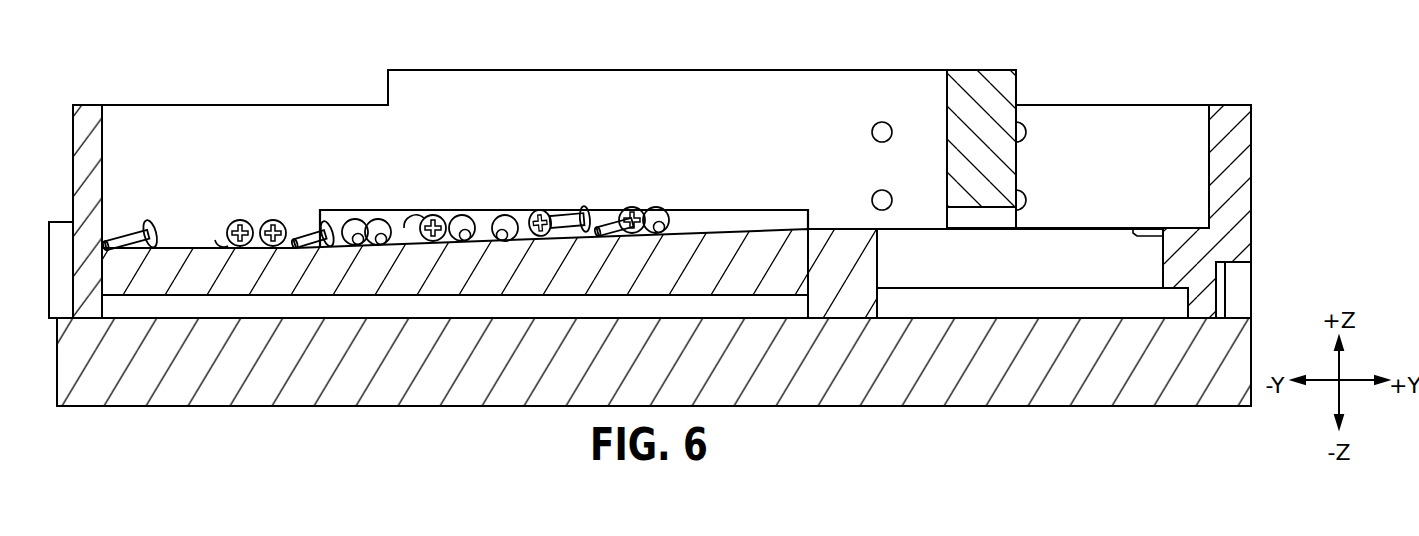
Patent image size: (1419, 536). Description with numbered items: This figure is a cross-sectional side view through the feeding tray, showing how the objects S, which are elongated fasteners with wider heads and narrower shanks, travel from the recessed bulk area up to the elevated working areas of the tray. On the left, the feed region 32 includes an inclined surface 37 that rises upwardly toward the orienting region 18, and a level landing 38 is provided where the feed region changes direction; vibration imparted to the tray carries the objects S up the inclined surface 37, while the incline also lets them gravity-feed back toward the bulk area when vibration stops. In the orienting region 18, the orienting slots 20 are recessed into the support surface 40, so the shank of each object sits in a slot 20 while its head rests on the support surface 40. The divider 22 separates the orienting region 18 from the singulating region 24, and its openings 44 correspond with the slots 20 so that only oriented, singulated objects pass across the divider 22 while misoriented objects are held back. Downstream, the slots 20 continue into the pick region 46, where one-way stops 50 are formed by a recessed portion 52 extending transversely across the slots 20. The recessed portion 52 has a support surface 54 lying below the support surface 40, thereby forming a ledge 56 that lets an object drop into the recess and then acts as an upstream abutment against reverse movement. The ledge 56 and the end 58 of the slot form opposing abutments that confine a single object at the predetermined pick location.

The orienting region 18 is at (860, 217).
The orienting slots 20 is at (980, 253).
The divider 22 is at (984, 80).
The singulating region 24 is at (1060, 160).
The feed region 32 is at (384, 143).
The objects S is at (563, 210).
The inclined surface 37 is at (715, 229).
The level landing 38 is at (197, 248).
The support surface 40 is at (1097, 228).
The openings 44 is at (960, 220).
The pick region 46 is at (1149, 206).
The one-way stops 50 is at (1161, 203).
The recessed portion 52 is at (1180, 240).
The support surface of the recessed portion 54 is at (1152, 230).
The ledge 56 is at (1137, 236).
The end of the slot 58 is at (1161, 237).